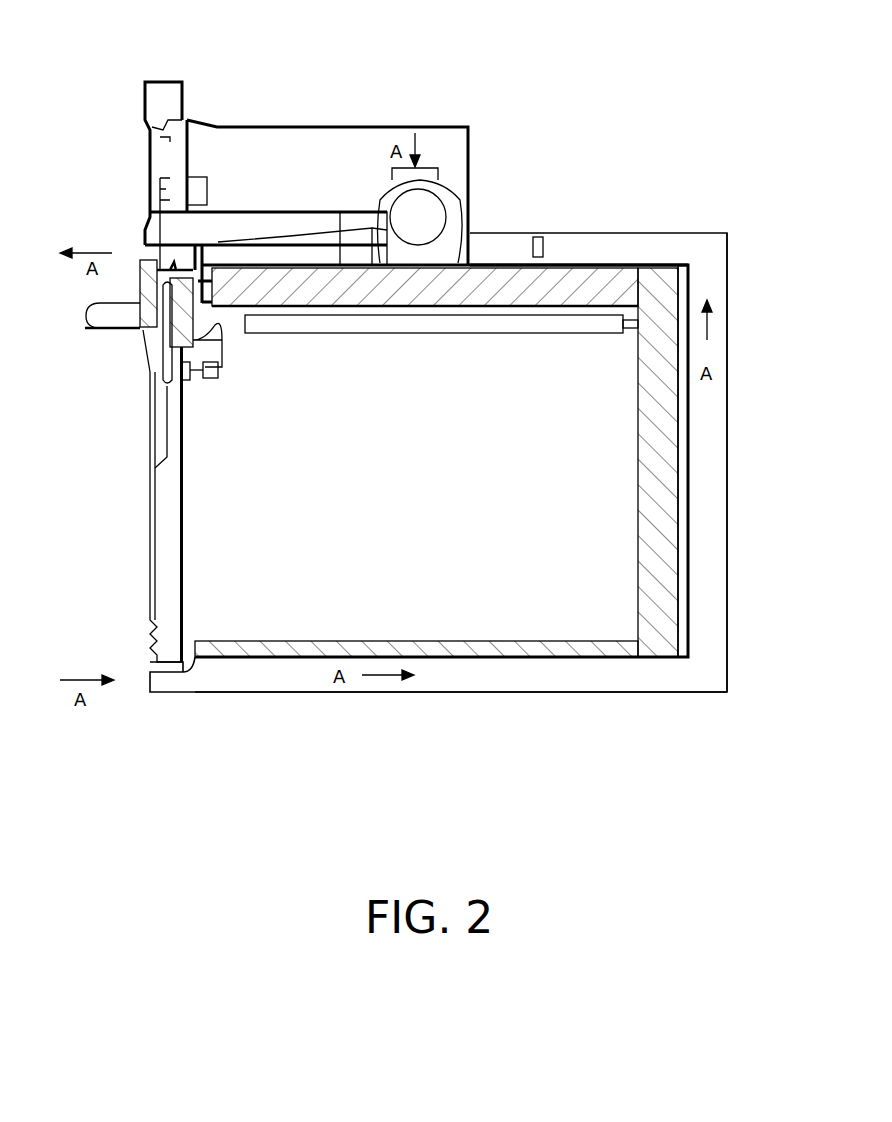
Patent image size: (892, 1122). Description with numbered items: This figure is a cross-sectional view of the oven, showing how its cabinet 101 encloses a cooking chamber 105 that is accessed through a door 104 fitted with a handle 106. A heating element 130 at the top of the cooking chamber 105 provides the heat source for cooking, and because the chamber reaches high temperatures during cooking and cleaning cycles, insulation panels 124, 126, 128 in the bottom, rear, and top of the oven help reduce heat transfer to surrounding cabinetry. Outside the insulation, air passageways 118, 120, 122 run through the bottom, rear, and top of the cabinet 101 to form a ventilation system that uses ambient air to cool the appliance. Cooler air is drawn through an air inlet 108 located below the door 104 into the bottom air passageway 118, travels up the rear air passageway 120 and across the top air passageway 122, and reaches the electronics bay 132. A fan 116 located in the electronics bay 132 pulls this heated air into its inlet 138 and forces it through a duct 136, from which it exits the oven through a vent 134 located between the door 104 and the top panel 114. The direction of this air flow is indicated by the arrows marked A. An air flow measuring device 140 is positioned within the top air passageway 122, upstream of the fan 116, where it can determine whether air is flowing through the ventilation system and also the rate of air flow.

The cabinet 101 is at (728, 274).
The door 104 is at (157, 548).
The cooking chamber 105 is at (597, 563).
The handle 106 is at (92, 318).
The air inlet 108 is at (136, 677).
The top panel 114 is at (152, 100).
The fan 116 is at (432, 212).
The air passageway 118 is at (511, 666).
The air passageway 120 is at (704, 516).
The air passageway 122 is at (613, 251).
The insulation panel 124 is at (280, 648).
The insulation panel 126 is at (669, 405).
The insulation panel 128 is at (597, 283).
The heating element 130 is at (432, 333).
The electronics bay 132 is at (363, 160).
The vent 134 is at (143, 250).
The duct 136 is at (347, 240).
The inlet 138 is at (428, 163).
The air flow measuring device 140 is at (531, 235).